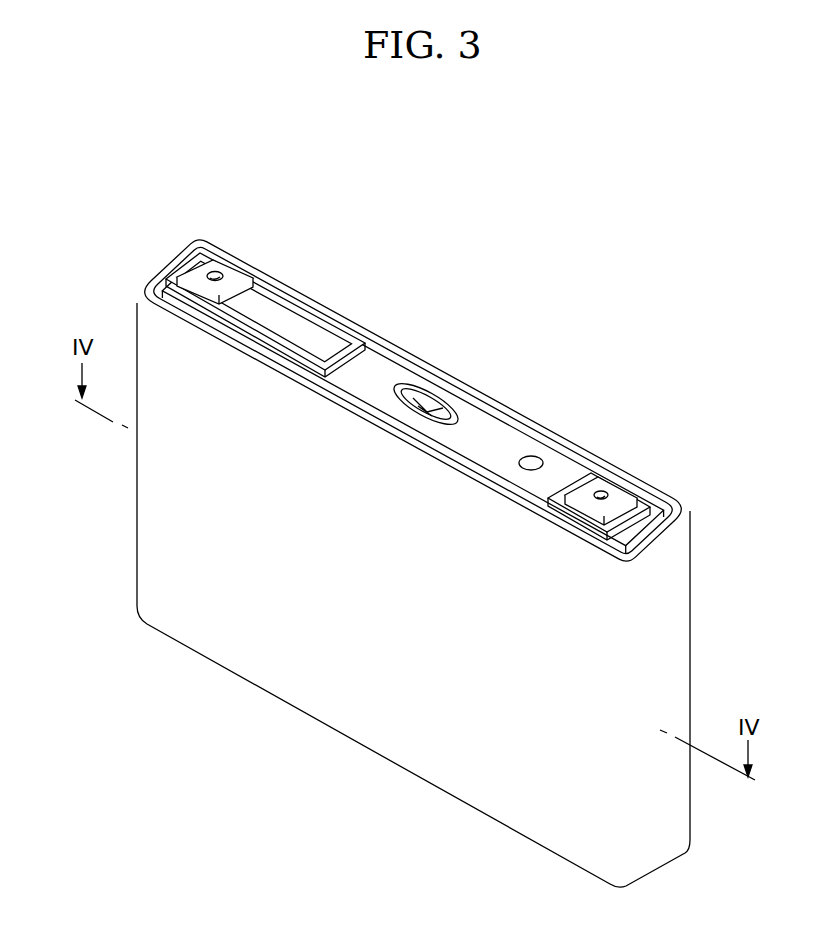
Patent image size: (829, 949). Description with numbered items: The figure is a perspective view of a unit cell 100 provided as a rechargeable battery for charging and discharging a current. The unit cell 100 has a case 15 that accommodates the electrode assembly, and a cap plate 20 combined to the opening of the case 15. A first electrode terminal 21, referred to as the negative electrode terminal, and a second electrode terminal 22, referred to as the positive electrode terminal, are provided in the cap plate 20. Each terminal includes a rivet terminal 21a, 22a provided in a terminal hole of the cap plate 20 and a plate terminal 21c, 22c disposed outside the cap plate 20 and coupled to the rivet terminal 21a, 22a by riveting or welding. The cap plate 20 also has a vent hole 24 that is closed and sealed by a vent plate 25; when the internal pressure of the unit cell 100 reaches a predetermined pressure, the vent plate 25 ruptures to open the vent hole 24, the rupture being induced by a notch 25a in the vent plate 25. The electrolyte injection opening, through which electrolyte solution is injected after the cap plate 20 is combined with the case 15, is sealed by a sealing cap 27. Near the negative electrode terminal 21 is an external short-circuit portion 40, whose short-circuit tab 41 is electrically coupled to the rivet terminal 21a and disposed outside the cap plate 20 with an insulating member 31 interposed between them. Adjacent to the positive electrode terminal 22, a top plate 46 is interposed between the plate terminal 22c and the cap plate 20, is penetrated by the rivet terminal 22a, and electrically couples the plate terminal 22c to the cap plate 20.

The unit cell 100 is at (532, 262).
The case 15 is at (340, 700).
The cap plate 20 is at (386, 370).
The first electrode terminal 21 is at (218, 247).
The rivet terminal 21a is at (208, 270).
The plate terminal 21c is at (237, 277).
The second electrode terminal 22 is at (661, 487).
The rivet terminal 22a is at (612, 496).
The plate terminal 22c is at (614, 505).
The vent hole 24 is at (415, 388).
The vent plate 25 is at (432, 408).
The notch 25a is at (438, 418).
The sealing cap 27 is at (532, 462).
The insulating member 31 is at (278, 296).
The external short-circuit portion 40 is at (285, 303).
The short-circuit tab 41 is at (331, 344).
The top plate 46 is at (620, 525).